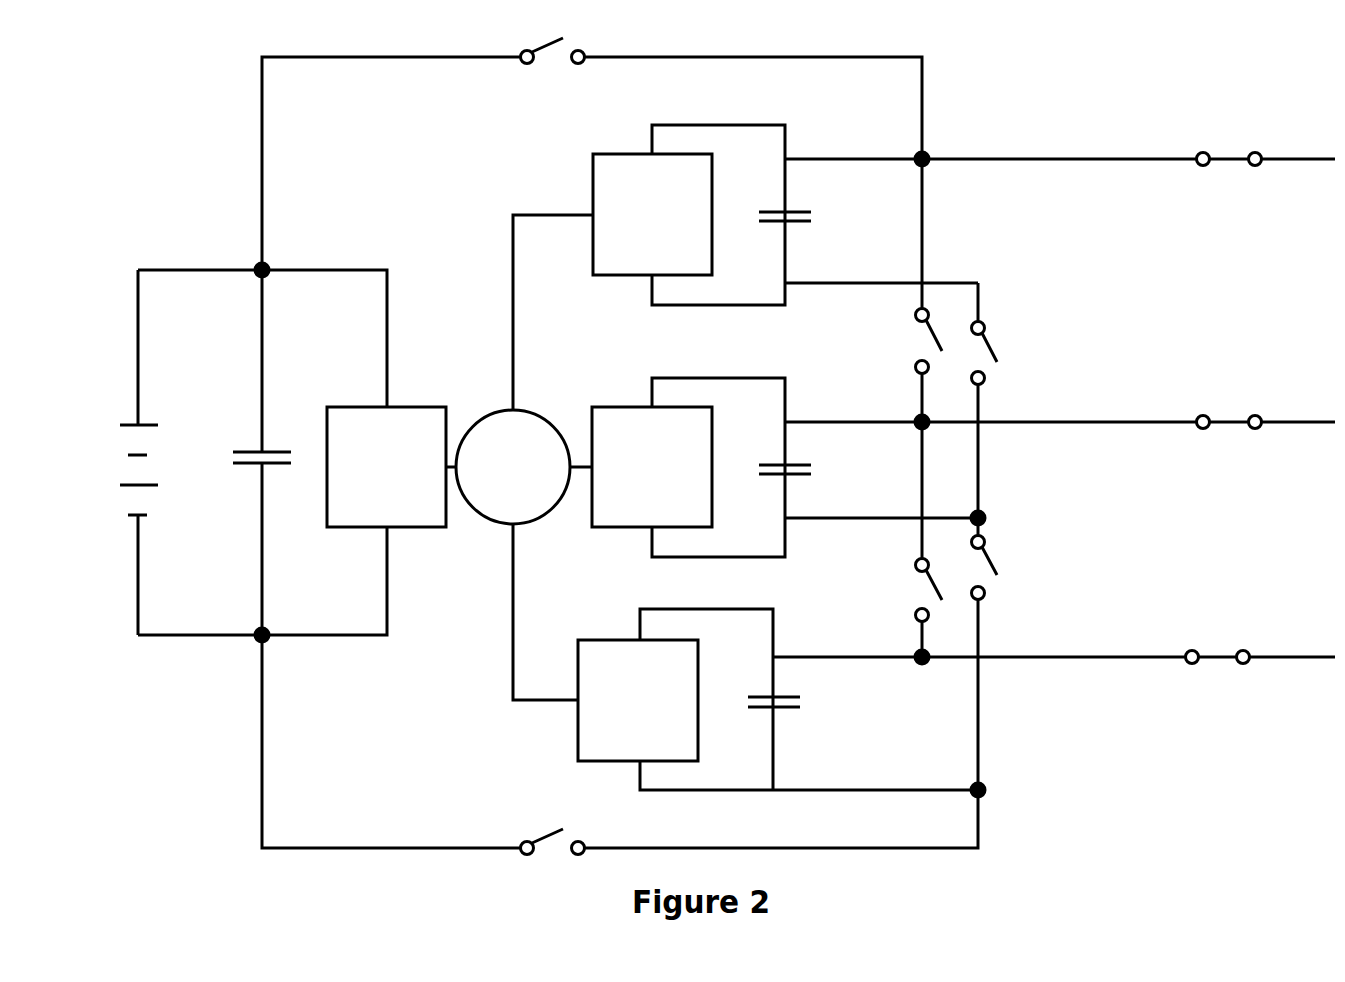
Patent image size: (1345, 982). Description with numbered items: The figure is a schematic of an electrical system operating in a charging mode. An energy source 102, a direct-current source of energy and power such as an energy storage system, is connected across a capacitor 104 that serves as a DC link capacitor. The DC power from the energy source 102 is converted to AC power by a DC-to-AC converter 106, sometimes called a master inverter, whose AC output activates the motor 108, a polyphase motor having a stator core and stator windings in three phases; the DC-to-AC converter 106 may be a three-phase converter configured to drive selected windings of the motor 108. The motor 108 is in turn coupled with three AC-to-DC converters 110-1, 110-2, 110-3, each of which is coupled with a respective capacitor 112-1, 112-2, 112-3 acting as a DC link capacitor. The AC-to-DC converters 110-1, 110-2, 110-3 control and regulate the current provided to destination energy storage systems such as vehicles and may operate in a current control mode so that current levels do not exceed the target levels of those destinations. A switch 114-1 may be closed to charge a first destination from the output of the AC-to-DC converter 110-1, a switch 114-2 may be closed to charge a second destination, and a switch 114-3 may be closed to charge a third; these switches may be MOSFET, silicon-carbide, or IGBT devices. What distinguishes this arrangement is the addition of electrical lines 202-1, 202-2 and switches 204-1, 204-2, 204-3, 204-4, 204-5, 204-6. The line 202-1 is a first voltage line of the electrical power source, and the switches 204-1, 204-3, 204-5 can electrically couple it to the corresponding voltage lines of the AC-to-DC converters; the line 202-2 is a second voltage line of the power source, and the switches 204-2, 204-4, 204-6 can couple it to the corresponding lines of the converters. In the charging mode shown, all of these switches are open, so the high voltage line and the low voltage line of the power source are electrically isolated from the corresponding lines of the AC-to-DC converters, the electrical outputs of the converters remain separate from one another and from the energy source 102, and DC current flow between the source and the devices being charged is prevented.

The energy source 102 is at (117, 468).
The capacitor 104 is at (255, 450).
The DC-to-AC converter 106 is at (386, 467).
The motor 108 is at (513, 467).
The AC-to-DC converter 110-1 is at (652, 214).
The AC-to-DC converter 110-2 is at (652, 467).
The AC-to-DC converter 110-3 is at (638, 700).
The capacitor 112-1 is at (813, 218).
The capacitor 112-2 is at (813, 471).
The capacitor 112-3 is at (801, 704).
The switch 114-1 is at (1237, 157).
The switch 114-2 is at (1237, 419).
The switch 114-3 is at (1225, 654).
The line 202-1 is at (280, 55).
The line 202-2 is at (262, 838).
The switch 204-1 is at (550, 43).
The switch 204-2 is at (550, 833).
The switch 204-3 is at (930, 330).
The switch 204-4 is at (995, 357).
The switch 204-5 is at (930, 580).
The switch 204-6 is at (995, 570).